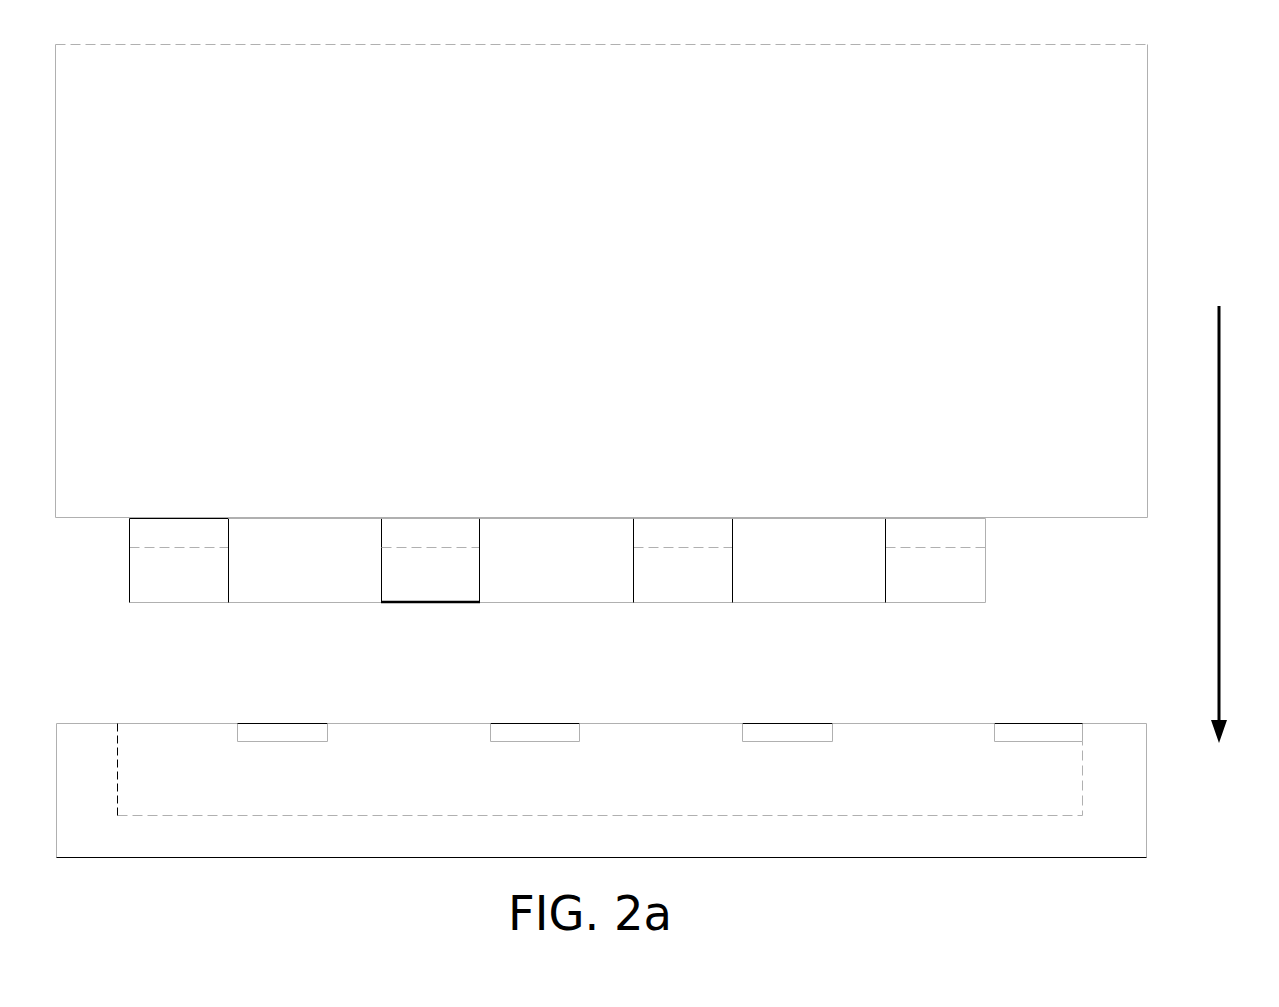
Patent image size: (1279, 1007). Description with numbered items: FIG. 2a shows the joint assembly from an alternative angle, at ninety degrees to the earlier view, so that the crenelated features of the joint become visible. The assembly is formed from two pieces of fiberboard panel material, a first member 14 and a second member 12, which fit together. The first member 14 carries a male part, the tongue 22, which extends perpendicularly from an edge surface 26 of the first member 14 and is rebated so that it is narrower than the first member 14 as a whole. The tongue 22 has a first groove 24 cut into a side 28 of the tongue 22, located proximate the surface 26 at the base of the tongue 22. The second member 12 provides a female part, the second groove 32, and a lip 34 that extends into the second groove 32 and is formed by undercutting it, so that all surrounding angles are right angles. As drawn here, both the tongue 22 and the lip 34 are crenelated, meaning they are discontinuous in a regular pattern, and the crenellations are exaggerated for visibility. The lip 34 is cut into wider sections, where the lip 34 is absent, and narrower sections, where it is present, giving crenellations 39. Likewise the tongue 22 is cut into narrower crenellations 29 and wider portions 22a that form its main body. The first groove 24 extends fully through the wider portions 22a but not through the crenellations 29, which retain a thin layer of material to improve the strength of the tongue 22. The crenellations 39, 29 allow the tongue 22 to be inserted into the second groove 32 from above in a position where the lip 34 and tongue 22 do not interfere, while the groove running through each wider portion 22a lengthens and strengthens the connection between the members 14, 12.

The first member 14 is at (1147, 158).
The second member 12 is at (1147, 810).
The tongue 22 is at (293, 603).
The wider portions 22a is at (172, 603).
The first groove 24 is at (472, 531).
The edge surface 26 is at (270, 518).
The side of the tongue 28 is at (480, 578).
The crenellations of the tongue 29 is at (820, 592).
The second groove 32 is at (151, 741).
The lip 34 is at (267, 722).
The crenellations of the lip 39 is at (380, 712).